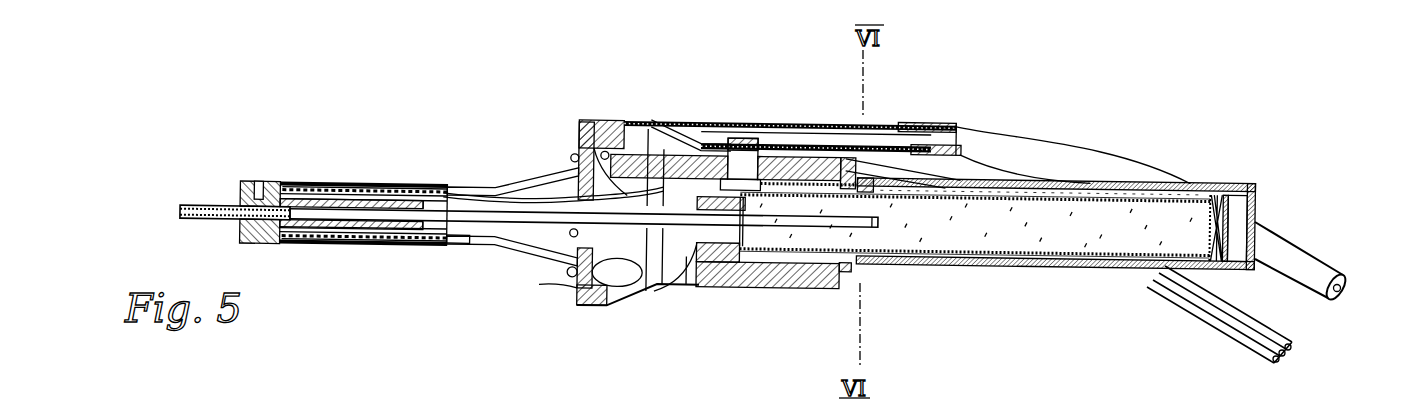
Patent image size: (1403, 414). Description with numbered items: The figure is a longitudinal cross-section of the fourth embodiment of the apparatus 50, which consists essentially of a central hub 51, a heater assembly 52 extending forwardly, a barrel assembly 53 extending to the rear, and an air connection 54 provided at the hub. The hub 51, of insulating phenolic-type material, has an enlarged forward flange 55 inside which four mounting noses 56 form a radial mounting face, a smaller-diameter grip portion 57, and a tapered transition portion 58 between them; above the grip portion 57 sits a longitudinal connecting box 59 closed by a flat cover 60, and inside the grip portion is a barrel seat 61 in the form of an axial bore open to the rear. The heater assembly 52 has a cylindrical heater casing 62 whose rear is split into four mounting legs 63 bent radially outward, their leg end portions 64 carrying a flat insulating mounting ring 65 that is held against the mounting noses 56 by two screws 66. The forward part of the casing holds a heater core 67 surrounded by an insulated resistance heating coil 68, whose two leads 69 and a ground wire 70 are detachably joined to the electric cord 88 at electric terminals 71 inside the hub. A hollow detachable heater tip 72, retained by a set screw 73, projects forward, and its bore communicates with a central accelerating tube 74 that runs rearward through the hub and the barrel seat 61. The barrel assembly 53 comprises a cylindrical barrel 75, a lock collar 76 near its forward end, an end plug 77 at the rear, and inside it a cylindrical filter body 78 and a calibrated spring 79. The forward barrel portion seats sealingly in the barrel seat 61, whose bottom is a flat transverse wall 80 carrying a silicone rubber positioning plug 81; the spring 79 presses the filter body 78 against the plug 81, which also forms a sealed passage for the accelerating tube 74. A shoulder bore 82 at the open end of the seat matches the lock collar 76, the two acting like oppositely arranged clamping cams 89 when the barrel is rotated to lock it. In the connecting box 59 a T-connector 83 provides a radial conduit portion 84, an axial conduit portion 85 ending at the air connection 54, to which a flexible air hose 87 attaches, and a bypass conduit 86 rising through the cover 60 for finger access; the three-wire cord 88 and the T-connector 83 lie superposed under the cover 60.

The apparatus 50 is at (557, 117).
The central hub 51 is at (730, 290).
The heater assembly 52 is at (317, 179).
The barrel assembly 53 is at (1018, 275).
The air connection 54 is at (918, 130).
The forward flange 55 is at (585, 320).
The mounting noses 56 is at (577, 175).
The grip portion 57 is at (778, 288).
The tapered transition portion 58 is at (648, 293).
The connecting box 59 is at (645, 137).
The cover 60 is at (747, 120).
The barrel seat 61 is at (748, 288).
The heater casing 62 is at (463, 249).
The mounting legs 63 is at (512, 187).
The leg end portions 64 is at (548, 287).
The mounting ring 65 is at (585, 290).
The screws 66 is at (575, 228).
The heater core 67 is at (347, 243).
The resistance heating coil 68 is at (398, 243).
The leads 69 is at (445, 190).
The ground wire 70 is at (625, 120).
The electric terminals 71 is at (662, 142).
The heater tip 72 is at (201, 205).
The set screw 73 is at (258, 180).
The accelerating tube 74 is at (327, 243).
The barrel 75 is at (1188, 188).
The lock collar 76 is at (855, 270).
The end plug 77 is at (1238, 220).
The filter body 78 is at (967, 255).
The calibrated spring 79 is at (1140, 268).
The transverse wall 80 is at (690, 262).
The positioning plug 81 is at (672, 265).
The shoulder bore 82 is at (847, 275).
The T-connector 83 is at (781, 120).
The radial conduit portion 84 is at (788, 127).
The axial conduit portion 85 is at (868, 137).
The bypass conduit 86 is at (702, 135).
The flexible air hose 87 is at (1038, 148).
The electric cord 88 is at (978, 150).
The clamping cams 89 is at (271, 413).